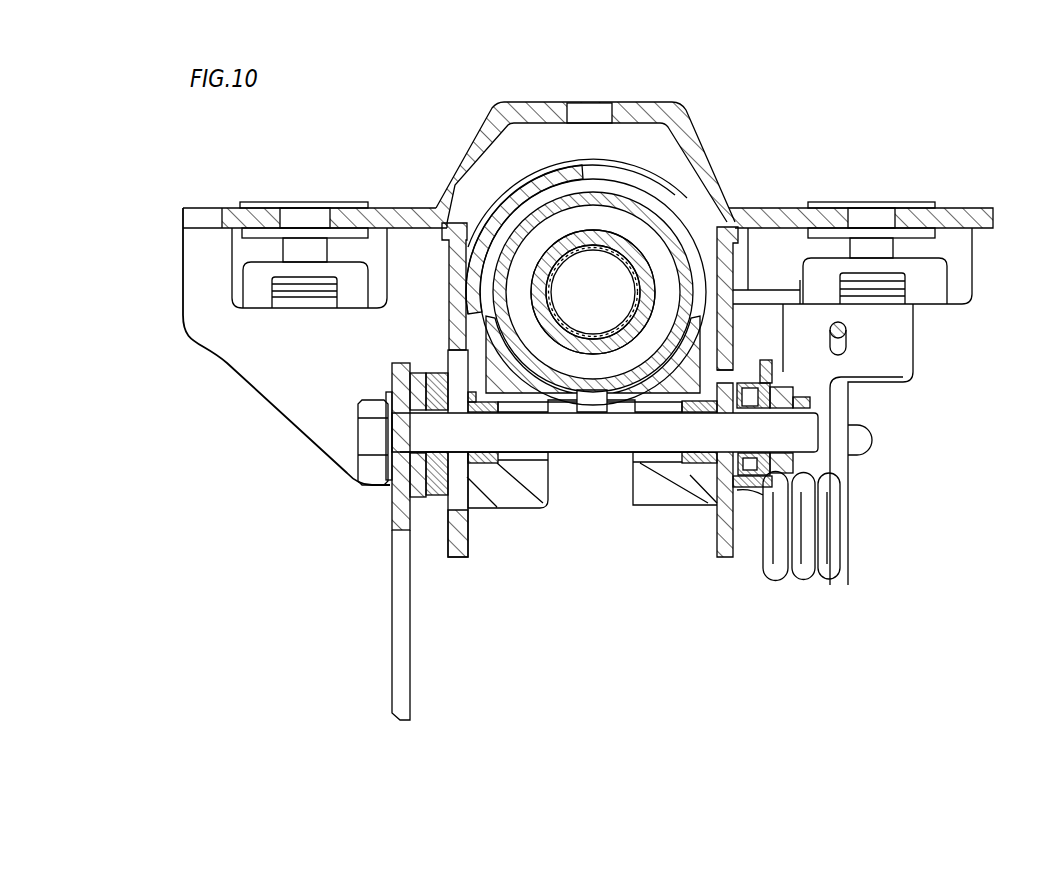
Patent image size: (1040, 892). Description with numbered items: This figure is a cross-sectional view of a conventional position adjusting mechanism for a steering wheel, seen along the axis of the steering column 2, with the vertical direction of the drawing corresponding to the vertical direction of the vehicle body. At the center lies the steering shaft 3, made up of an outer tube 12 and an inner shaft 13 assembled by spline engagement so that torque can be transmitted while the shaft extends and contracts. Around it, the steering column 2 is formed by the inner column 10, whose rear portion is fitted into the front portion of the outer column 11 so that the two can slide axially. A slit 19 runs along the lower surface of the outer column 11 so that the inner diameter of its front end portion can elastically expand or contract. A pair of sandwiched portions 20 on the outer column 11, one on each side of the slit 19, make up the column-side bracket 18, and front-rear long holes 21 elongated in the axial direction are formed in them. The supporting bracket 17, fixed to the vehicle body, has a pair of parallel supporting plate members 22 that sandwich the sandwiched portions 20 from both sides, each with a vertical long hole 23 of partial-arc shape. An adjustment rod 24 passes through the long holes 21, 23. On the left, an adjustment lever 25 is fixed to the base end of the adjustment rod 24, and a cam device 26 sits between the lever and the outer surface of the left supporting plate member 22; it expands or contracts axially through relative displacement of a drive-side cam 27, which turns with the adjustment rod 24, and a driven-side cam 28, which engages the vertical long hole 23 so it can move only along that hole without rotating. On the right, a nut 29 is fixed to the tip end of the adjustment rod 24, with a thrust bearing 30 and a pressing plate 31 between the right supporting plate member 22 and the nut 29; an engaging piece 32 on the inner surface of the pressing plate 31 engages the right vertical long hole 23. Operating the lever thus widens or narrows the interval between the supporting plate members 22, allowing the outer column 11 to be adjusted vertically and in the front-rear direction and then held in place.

The steering column 2 is at (662, 198).
The steering shaft 3 is at (587, 237).
The inner column 10 is at (672, 138).
The outer column 11 is at (465, 180).
The outer tube 12 is at (557, 247).
The inner shaft 13 is at (650, 272).
The supporting bracket 17 is at (692, 137).
The column-side bracket 18 is at (668, 495).
The slit 19 is at (582, 440).
The sandwiched portions 20 is at (490, 497).
The front-rear long holes 21 is at (532, 443).
The supporting plate members 22 is at (457, 305).
The vertical long holes 23 is at (447, 513).
The adjustment rod 24 is at (603, 440).
The adjustment lever 25 is at (400, 677).
The cam device 26 is at (393, 407).
The drive-side cam 27 is at (407, 500).
The driven-side cam 28 is at (440, 495).
The nut 29 is at (787, 392).
The thrust bearing 30 is at (775, 414).
The pressing plate 31 is at (770, 365).
The engaging piece 32 is at (795, 462).